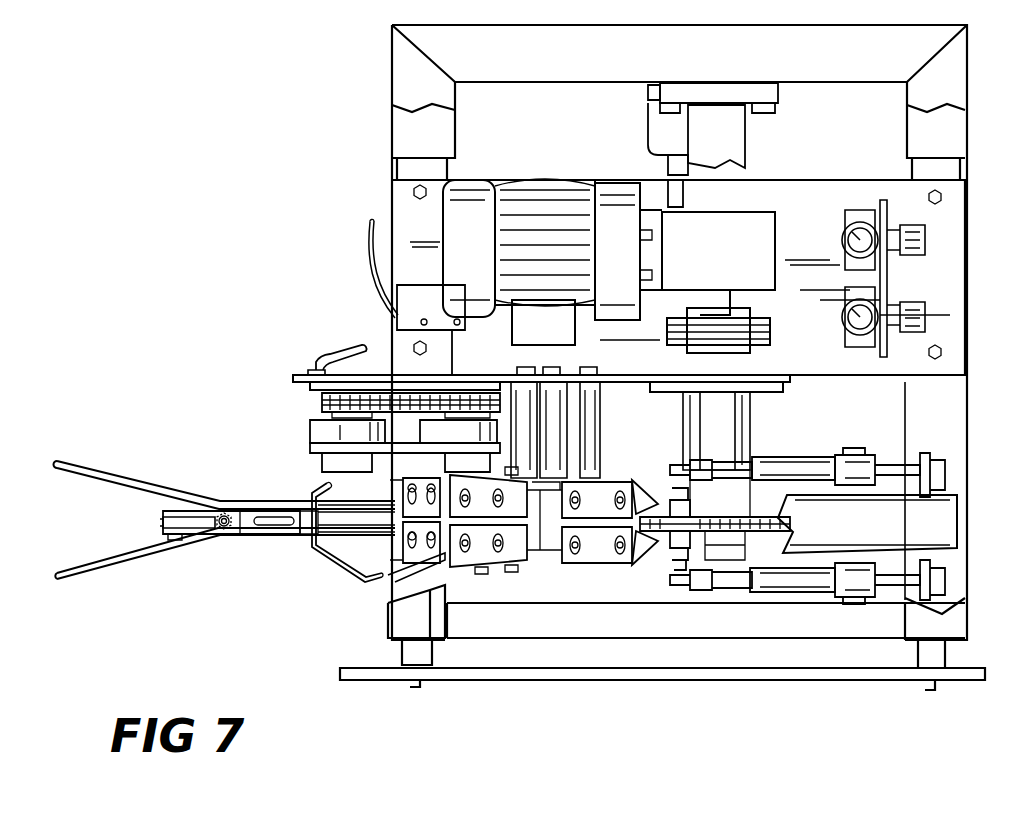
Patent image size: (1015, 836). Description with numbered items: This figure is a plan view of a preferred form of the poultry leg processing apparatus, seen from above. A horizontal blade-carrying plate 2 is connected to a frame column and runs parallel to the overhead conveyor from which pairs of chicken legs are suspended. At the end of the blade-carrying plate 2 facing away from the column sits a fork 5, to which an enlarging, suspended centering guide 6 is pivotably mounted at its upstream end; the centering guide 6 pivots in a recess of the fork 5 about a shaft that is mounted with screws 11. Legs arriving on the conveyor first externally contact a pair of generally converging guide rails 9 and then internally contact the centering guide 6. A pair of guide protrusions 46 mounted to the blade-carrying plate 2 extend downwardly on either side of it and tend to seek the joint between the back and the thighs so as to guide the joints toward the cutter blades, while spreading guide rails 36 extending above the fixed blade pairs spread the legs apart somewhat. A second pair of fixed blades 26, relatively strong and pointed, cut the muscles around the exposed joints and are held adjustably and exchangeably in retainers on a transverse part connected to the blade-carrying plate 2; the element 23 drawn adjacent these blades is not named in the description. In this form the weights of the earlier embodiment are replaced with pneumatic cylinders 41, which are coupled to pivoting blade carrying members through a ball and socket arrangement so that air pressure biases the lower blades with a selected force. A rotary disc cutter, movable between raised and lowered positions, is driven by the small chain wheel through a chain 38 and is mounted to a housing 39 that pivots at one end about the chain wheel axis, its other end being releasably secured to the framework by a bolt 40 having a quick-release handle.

The blade-carrying plate 2 is at (950, 527).
The fork 5 is at (252, 507).
The centering guide 6 is at (162, 520).
The guide rails 9 is at (98, 535).
The screws 11 is at (168, 538).
The clamp blocks 23 is at (497, 565).
The second pair of fixed blades 26 is at (655, 500).
The spreading guide rails 36 is at (362, 572).
The chain 38 is at (322, 405).
The housing 39 is at (310, 434).
The bolt 40 is at (341, 354).
The pneumatic cylinders 41 is at (800, 465).
The guide protrusions 46 is at (432, 560).